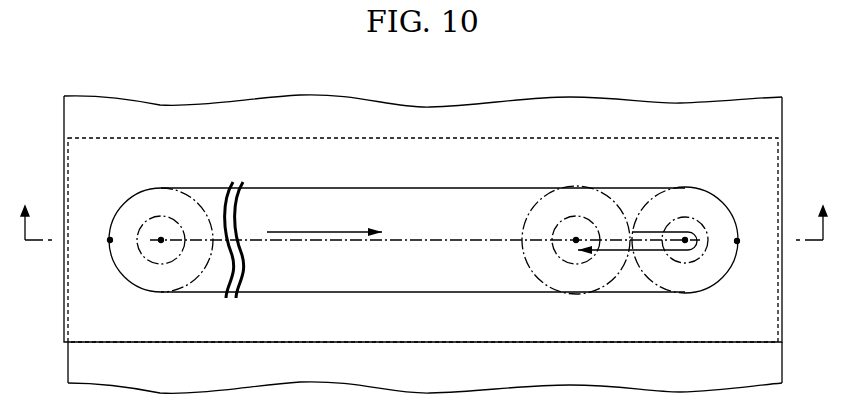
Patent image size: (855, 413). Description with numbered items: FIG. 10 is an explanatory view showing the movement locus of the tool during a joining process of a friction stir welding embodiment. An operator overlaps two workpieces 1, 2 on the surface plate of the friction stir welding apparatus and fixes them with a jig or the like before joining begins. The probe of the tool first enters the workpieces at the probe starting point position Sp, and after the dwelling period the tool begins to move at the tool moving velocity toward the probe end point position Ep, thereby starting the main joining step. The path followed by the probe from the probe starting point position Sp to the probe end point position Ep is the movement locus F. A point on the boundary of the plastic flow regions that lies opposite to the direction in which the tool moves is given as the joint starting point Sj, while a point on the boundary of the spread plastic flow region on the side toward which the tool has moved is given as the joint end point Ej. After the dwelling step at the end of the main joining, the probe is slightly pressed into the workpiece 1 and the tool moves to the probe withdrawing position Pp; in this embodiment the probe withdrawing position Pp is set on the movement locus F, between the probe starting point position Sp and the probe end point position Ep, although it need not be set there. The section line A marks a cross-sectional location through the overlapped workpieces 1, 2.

The workpiece 1 is at (770, 122).
The workpiece 2 is at (766, 368).
The probe starting point position Sp is at (161, 240).
The joint starting point Sj is at (110, 241).
The movement locus F is at (462, 240).
The probe withdrawing position Pp is at (576, 240).
The probe end point position Ep is at (686, 240).
The joint end point Ej is at (737, 243).
The section line A- A is at (421, 239).